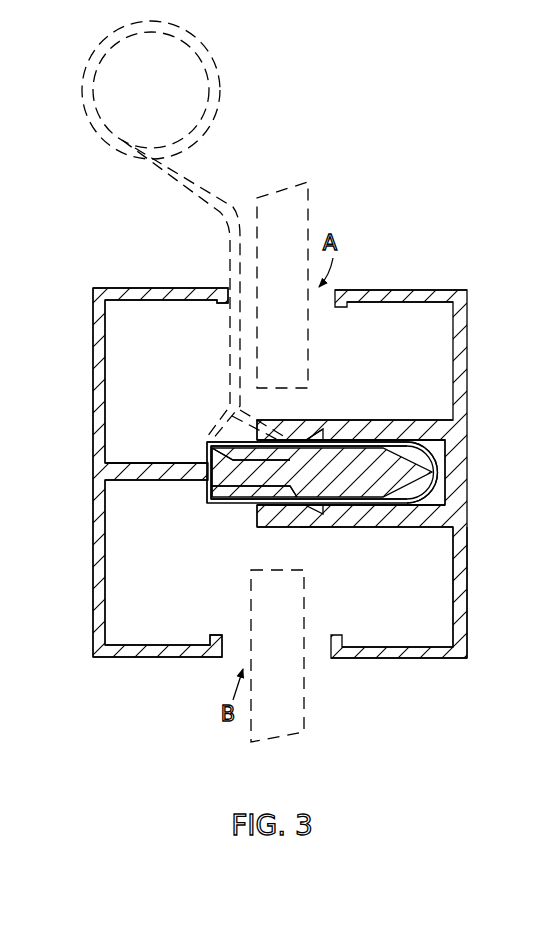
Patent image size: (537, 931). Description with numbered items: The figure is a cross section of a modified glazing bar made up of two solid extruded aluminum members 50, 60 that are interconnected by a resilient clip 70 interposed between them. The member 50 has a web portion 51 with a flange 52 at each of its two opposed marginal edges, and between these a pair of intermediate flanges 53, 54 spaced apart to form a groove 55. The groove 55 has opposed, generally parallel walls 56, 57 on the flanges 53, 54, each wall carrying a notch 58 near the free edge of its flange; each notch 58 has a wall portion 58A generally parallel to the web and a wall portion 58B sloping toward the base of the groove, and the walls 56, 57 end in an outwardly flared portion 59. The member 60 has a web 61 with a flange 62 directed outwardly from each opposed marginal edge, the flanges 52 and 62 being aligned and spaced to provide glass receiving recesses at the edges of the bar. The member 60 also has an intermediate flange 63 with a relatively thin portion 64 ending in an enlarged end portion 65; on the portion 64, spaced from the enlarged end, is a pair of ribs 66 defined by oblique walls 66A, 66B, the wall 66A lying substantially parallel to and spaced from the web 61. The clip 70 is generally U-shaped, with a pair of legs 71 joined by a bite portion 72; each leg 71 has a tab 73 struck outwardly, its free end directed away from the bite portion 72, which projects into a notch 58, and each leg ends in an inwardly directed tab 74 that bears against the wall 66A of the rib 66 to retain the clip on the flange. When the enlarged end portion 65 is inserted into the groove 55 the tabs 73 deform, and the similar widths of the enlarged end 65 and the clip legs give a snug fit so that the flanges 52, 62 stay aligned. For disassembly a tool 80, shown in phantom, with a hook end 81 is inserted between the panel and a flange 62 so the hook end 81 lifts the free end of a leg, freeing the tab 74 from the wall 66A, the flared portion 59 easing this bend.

The extruded aluminum member 50 is at (478, 372).
The web portion 51 is at (459, 541).
The flange 52 is at (398, 659).
The intermediate flange 53 is at (356, 432).
The intermediate flange 54 is at (376, 530).
The groove 55 is at (441, 444).
The wall 56 is at (393, 432).
The wall 57 is at (326, 512).
The notch 58 is at (320, 436).
The notch wall portion 58A is at (307, 513).
The notch wall portion 58B is at (331, 529).
The outwardly flared portion 59 is at (312, 437).
The extruded aluminum member 60 is at (43, 406).
The web 61 is at (101, 334).
The flange 62 is at (131, 288).
The intermediate flange 63 is at (121, 477).
The relatively thin portion 64 is at (172, 481).
The enlarged end portion 65 is at (387, 488).
The rib 66 is at (209, 440).
The oblique wall 66A is at (210, 492).
The oblique wall 66B is at (231, 497).
The clip 70 is at (447, 466).
The leg 71 is at (302, 444).
The bite portion 72 is at (439, 478).
The tab 73 is at (340, 438).
The inwardly directed tab 74 is at (205, 453).
The tool 80 is at (104, 129).
The hook end 81 is at (245, 430).